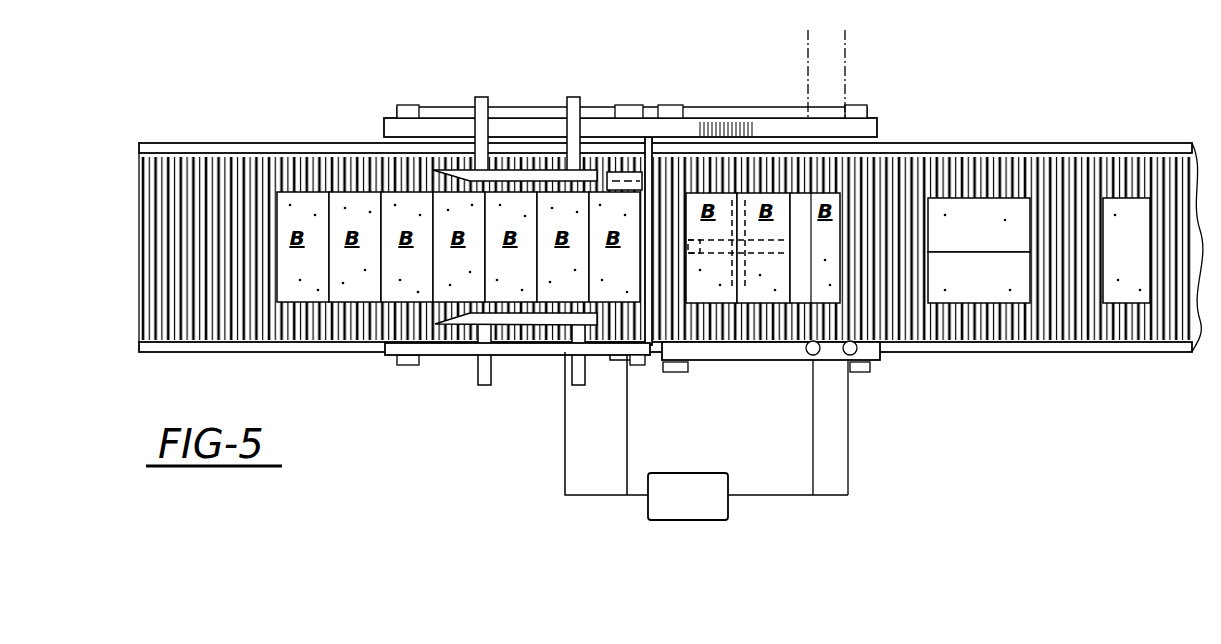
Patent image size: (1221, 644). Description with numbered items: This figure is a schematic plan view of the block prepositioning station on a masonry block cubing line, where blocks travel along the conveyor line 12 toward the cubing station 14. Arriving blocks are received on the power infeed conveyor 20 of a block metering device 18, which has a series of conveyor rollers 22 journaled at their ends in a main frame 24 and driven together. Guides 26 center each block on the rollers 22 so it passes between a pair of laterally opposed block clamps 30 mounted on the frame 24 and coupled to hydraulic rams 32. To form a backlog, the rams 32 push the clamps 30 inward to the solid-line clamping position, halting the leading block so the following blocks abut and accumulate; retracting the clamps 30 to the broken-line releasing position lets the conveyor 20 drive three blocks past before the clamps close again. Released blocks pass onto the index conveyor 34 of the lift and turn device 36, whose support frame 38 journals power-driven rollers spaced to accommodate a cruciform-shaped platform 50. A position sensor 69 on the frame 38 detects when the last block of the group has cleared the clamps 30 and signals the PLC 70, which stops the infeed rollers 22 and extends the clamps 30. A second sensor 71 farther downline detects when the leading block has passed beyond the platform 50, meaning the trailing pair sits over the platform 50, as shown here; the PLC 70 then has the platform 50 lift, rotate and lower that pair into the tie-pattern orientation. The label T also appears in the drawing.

The conveyor line 12 is at (277, 138).
The cubing station 14 is at (640, 44).
The block metering device 18 is at (620, 115).
The power infeed conveyor 20 is at (451, 102).
The conveyor rollers 22 is at (387, 358).
The main frame 24 is at (401, 105).
The guides 26 is at (503, 168).
The block clamps 30 is at (608, 178).
The hydraulic rams 32 is at (646, 122).
The index conveyor 34 is at (731, 115).
The lift and turn device 36 is at (790, 232).
The support frame 38 is at (778, 128).
The cruciform-shaped platform 50 is at (762, 285).
The position sensor 69 is at (798, 366).
The PLC 70 is at (732, 498).
The sensor 71 is at (862, 365).
The transfer direction T is at (1066, 362).